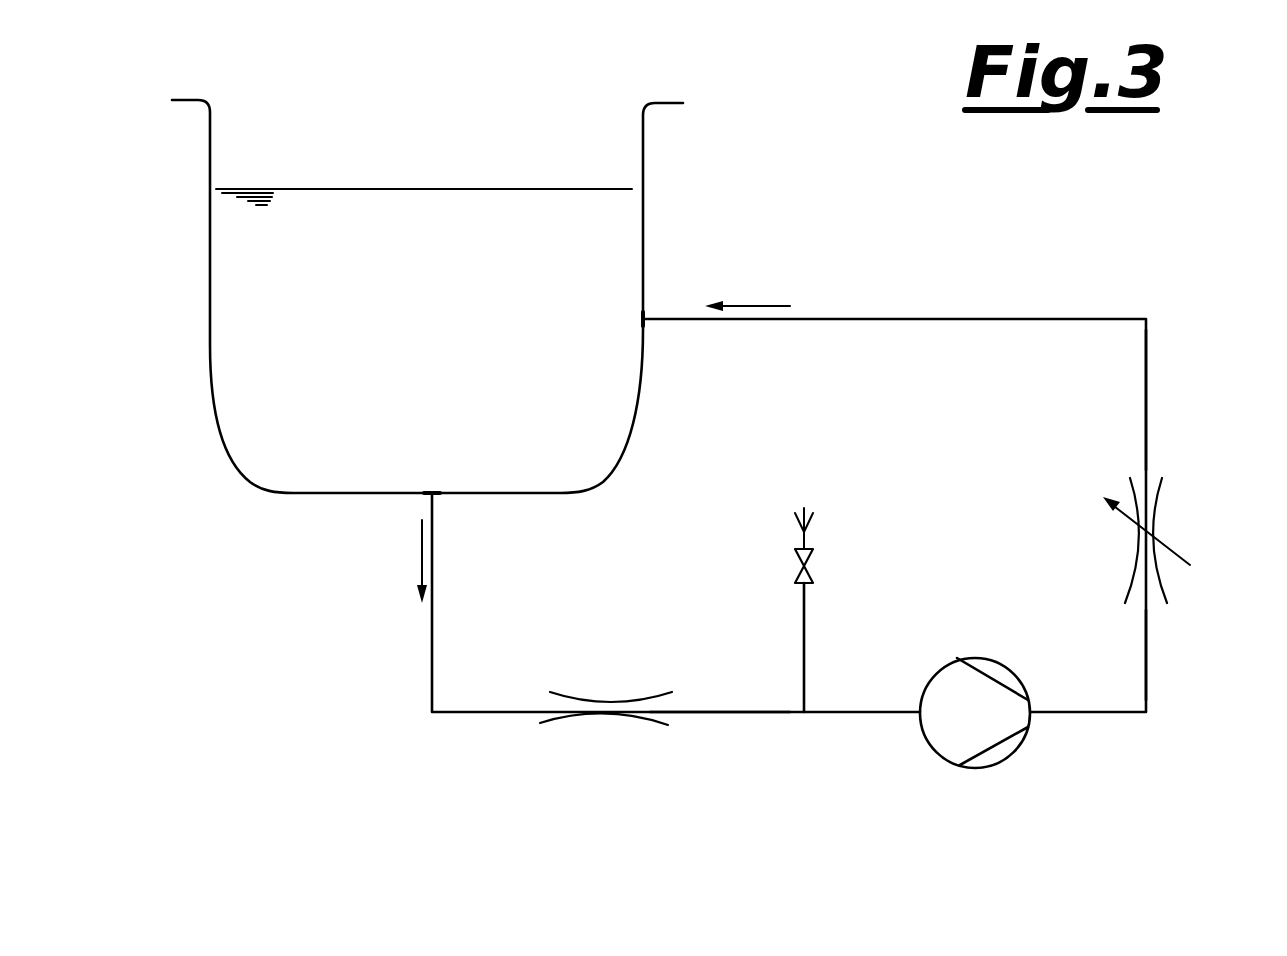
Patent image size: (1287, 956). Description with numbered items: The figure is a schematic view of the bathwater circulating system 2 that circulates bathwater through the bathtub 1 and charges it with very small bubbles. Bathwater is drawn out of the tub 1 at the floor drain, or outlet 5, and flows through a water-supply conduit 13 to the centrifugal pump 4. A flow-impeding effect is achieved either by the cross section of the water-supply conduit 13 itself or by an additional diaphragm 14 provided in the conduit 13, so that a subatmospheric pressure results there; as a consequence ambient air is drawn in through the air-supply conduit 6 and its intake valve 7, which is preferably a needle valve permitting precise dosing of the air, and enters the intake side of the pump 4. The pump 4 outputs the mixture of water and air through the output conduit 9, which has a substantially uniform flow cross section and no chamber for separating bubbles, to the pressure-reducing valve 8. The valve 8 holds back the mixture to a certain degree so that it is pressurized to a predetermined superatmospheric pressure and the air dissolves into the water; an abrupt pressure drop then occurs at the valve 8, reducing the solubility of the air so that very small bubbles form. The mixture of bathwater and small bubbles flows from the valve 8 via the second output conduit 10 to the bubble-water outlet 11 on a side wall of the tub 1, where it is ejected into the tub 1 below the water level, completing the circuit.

The bathtub 1 is at (212, 343).
The bathwater circulating system 2 is at (1203, 322).
The centrifugal pump 4 is at (940, 770).
The floor drain 5 is at (428, 490).
The air-supply conduit 6 is at (803, 625).
The intake valve 7 is at (820, 562).
The pressure-reducing valve 8 is at (1172, 511).
The output conduit 9 is at (1148, 668).
The second output conduit 10 is at (1148, 397).
The bubble-water outlet 11 is at (650, 310).
The water-supply conduit 13 is at (733, 712).
The diaphragm 14 is at (594, 724).